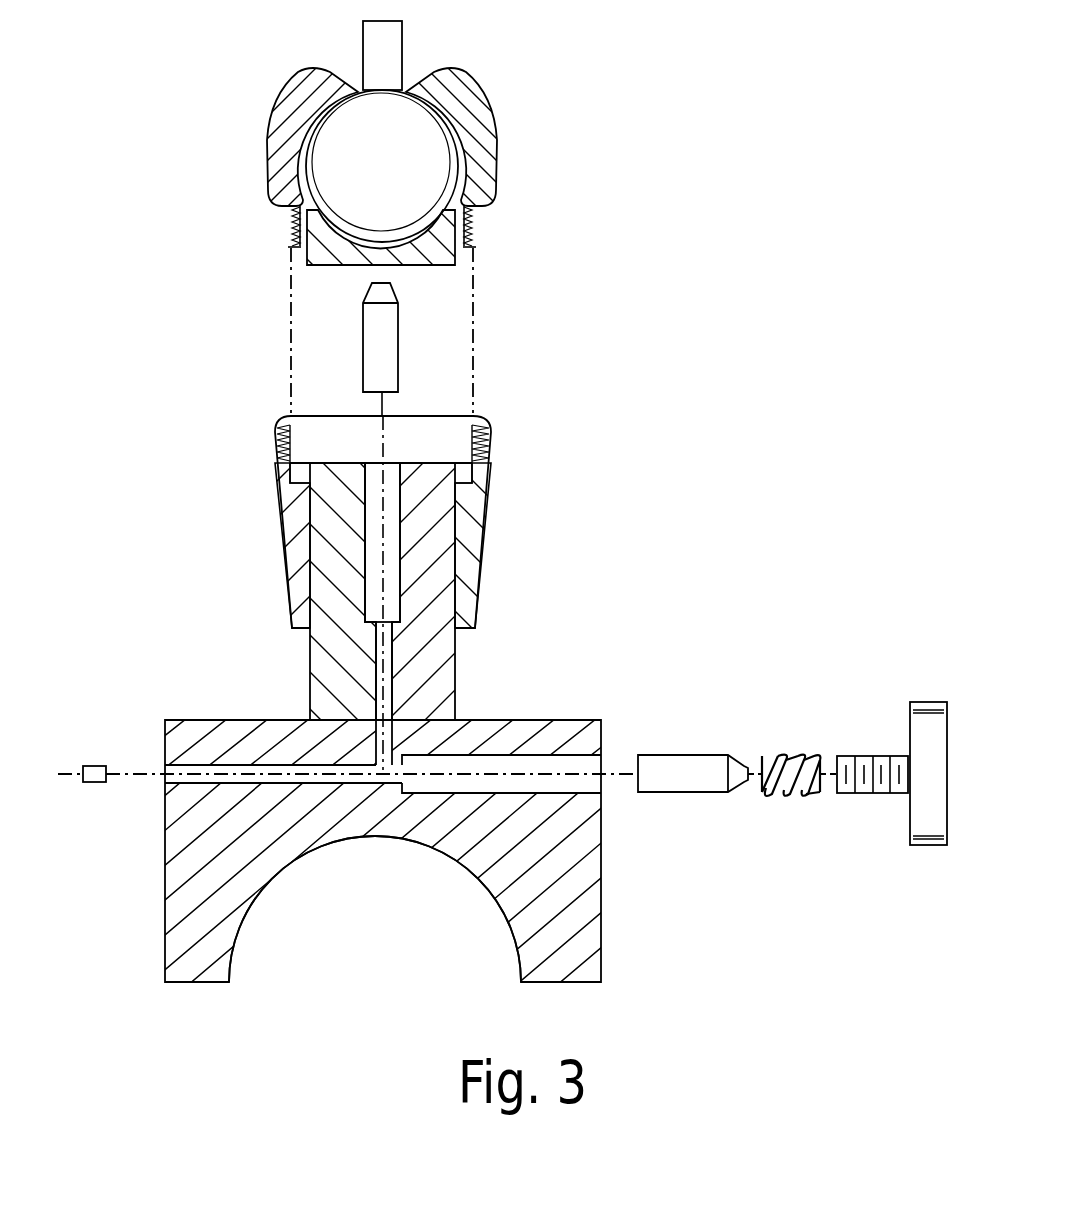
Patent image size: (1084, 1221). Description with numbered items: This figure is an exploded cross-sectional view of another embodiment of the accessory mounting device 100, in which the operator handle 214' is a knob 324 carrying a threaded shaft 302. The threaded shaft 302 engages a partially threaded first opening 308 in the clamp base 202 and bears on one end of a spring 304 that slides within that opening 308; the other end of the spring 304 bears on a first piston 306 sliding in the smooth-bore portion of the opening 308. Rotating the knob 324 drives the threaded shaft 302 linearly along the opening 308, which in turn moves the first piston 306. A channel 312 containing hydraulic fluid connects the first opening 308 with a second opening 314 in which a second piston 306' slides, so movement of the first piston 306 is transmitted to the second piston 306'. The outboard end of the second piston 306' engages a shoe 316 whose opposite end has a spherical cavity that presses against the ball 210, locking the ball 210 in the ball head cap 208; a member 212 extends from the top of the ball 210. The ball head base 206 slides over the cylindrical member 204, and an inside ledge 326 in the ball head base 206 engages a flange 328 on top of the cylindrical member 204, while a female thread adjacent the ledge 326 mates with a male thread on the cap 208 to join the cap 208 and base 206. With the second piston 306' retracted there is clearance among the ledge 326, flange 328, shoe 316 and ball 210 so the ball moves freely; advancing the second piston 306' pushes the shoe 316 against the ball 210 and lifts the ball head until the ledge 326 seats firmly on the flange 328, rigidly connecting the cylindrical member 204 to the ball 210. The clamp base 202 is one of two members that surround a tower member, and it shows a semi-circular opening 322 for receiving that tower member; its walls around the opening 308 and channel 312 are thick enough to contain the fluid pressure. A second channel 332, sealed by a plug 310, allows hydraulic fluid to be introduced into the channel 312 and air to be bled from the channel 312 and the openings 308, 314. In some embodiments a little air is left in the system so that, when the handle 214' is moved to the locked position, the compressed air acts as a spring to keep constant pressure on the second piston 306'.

The accessory mounting device 100 is at (775, 218).
The clamp base 202 is at (601, 917).
The cylindrical member 204 is at (456, 685).
The ball head base 206 is at (492, 452).
The ball head cap 208 is at (497, 120).
The ball 210 is at (398, 164).
The stem 212 is at (403, 50).
The operator handle 214' is at (897, 750).
The threaded shaft 302 is at (884, 793).
The spring 304 is at (786, 755).
The first piston 306 is at (697, 799).
The second piston 306' is at (452, 349).
The first opening 308 is at (552, 757).
The plug 310 is at (92, 766).
The channel 312 is at (373, 700).
The second opening 314 is at (363, 545).
The shoe 316 is at (428, 265).
The cylindrical recess 322 is at (405, 917).
The knob 324 is at (928, 845).
The inside ledge 326 is at (494, 522).
The flange 328 is at (290, 477).
The second channel 332 is at (226, 765).